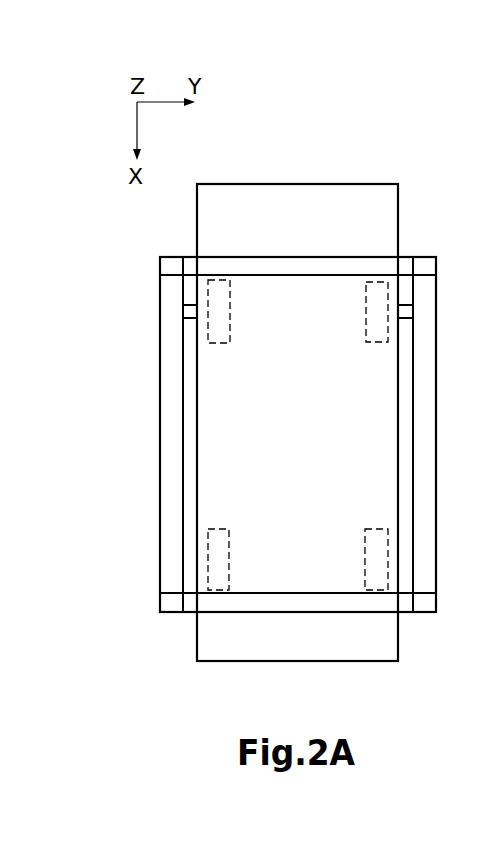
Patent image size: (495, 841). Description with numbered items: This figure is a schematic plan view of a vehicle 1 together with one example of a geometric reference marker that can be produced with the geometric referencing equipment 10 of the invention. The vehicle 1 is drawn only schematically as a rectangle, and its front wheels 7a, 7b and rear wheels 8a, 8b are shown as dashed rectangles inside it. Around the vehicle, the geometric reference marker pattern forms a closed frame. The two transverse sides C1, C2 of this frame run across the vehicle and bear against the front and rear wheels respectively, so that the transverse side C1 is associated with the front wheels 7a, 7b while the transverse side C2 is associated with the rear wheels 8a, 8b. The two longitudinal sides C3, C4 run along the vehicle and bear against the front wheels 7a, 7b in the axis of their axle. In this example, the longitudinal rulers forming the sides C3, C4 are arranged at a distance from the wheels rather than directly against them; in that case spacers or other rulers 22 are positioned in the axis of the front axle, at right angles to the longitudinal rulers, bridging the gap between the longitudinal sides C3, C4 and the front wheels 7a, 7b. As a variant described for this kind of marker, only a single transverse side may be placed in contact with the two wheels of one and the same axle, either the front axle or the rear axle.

The vehicle 1 is at (326, 184).
The geometric referencing equipment 10 is at (143, 284).
The spacers or other rulers 22 is at (183, 312).
The front wheel 7a is at (230, 335).
The front wheel 7b is at (372, 305).
The rear wheel 8a is at (222, 550).
The rear wheel 8b is at (370, 557).
The transverse side C1 is at (420, 257).
The transverse side C2 is at (420, 602).
The longitudinal side C3 is at (436, 447).
The longitudinal side C4 is at (168, 467).